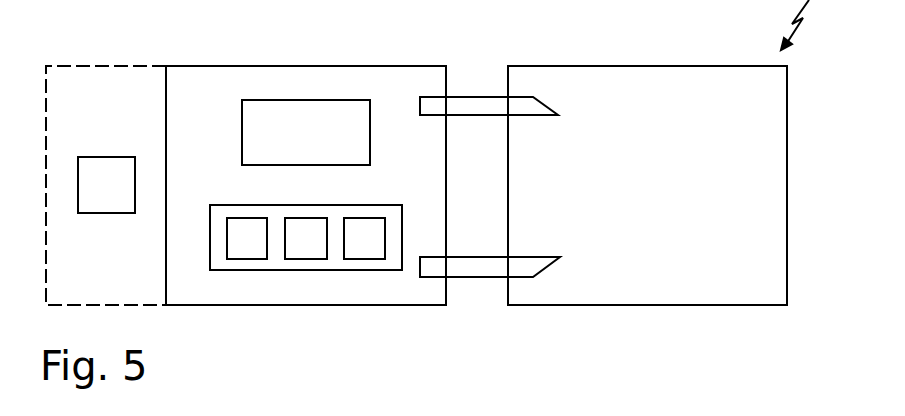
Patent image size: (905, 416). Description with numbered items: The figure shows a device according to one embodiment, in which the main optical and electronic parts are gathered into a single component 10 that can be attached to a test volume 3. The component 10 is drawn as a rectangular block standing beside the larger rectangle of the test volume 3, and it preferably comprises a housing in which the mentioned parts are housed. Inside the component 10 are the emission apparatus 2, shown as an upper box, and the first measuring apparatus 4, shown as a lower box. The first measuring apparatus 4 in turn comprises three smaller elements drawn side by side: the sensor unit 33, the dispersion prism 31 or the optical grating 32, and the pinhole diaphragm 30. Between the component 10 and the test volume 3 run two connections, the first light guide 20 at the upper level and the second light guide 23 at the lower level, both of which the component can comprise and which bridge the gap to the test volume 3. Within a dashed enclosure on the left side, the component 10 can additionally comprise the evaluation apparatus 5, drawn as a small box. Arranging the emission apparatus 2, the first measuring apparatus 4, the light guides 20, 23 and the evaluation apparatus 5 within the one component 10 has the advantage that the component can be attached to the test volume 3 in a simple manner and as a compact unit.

The component 10 is at (205, 79).
The emission apparatus 2 is at (298, 117).
The test volume 3 is at (627, 87).
The evaluation apparatus 5 is at (107, 170).
The first light guide 20 is at (477, 105).
The second light guide 23 is at (485, 268).
The first measuring apparatus 4 is at (275, 262).
The sensor unit 33 is at (243, 250).
The dispersion prism 31 is at (308, 250).
The optical grating 32 is at (306, 300).
The pinhole diaphragm 30 is at (367, 250).